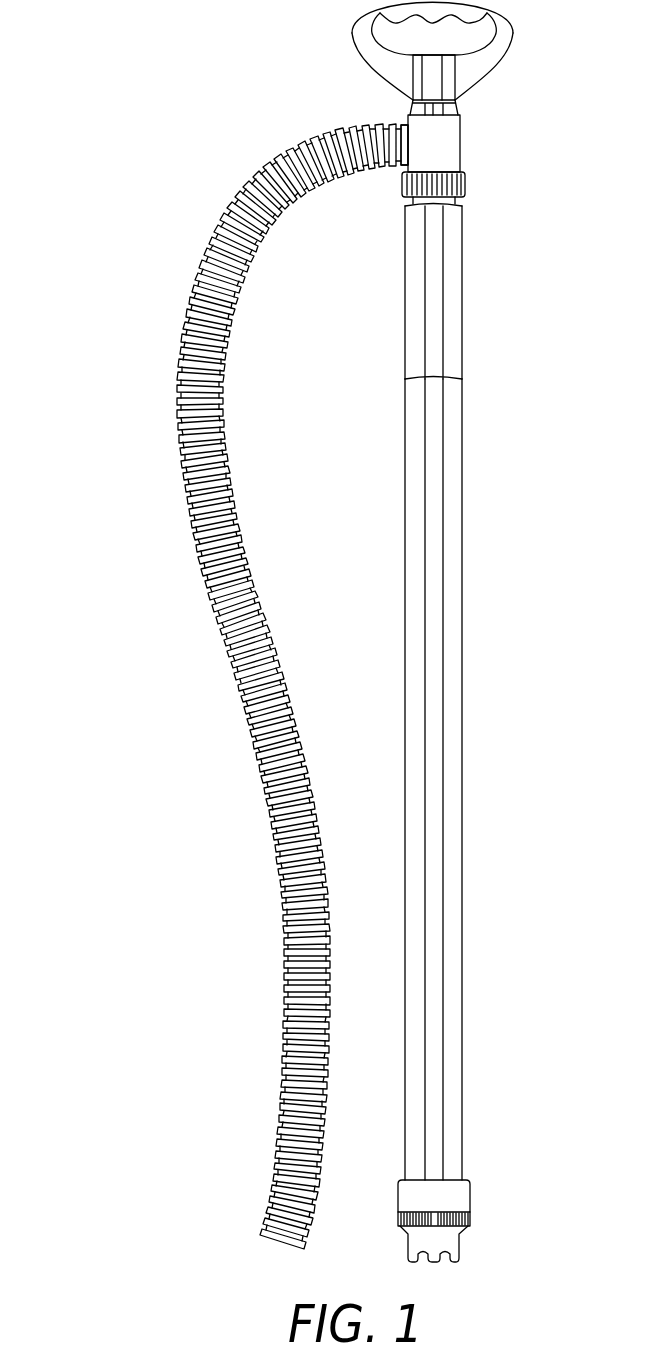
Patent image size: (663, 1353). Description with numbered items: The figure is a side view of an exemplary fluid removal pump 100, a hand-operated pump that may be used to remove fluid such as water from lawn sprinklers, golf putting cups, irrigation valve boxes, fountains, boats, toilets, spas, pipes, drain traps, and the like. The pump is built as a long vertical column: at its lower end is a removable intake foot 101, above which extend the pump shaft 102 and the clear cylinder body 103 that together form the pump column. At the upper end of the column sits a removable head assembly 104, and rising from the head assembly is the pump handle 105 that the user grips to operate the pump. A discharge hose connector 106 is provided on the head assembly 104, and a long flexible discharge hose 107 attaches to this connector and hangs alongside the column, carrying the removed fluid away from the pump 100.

The fluid removal pump 100 is at (89, 204).
The removable intake foot 101 is at (468, 1180).
The pump shaft 102 is at (443, 866).
The clear cylinder body 103 is at (462, 553).
The removable head assembly 104 is at (450, 153).
The pump handle 105 is at (455, 67).
The discharge hose connector 106 is at (393, 124).
The discharge hose 107 is at (212, 600).